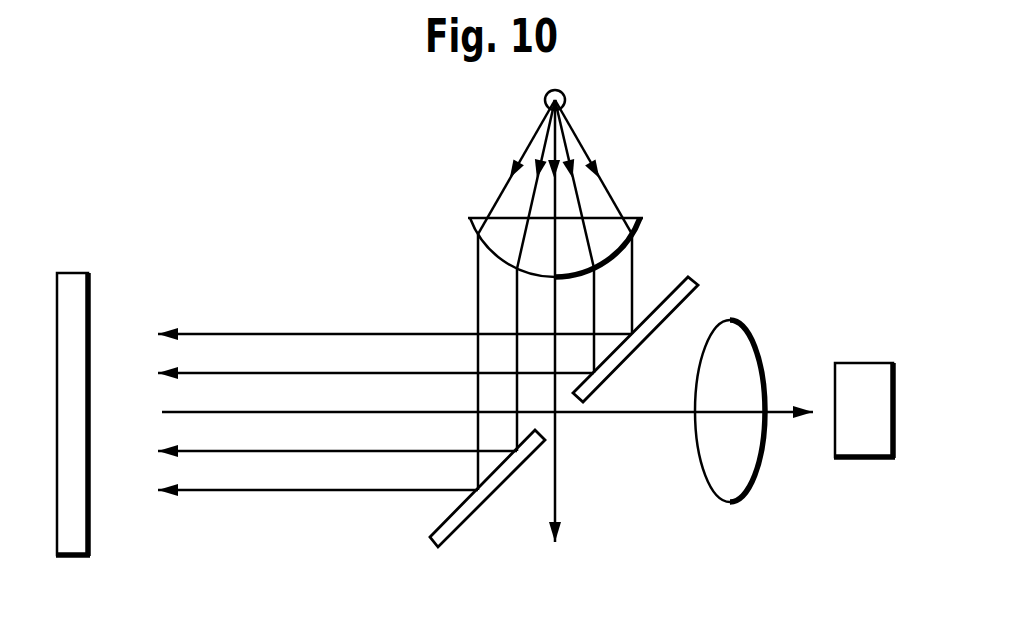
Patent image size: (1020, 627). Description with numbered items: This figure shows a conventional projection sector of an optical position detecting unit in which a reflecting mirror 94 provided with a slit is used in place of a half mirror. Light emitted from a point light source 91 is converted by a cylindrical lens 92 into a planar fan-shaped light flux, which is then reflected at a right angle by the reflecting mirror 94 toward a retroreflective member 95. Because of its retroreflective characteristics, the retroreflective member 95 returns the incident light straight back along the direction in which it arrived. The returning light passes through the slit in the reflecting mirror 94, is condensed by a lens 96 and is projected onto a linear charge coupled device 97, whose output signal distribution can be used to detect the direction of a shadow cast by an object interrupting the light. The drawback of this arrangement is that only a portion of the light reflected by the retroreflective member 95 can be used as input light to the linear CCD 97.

The point light source 91 is at (565, 97).
The cylindrical lens 92 is at (633, 223).
The reflecting mirror with a slit 94 is at (695, 280).
The retroreflective member 95 is at (78, 522).
The lens 96 is at (733, 490).
The linear charge coupled device (CCD) 97 is at (857, 452).